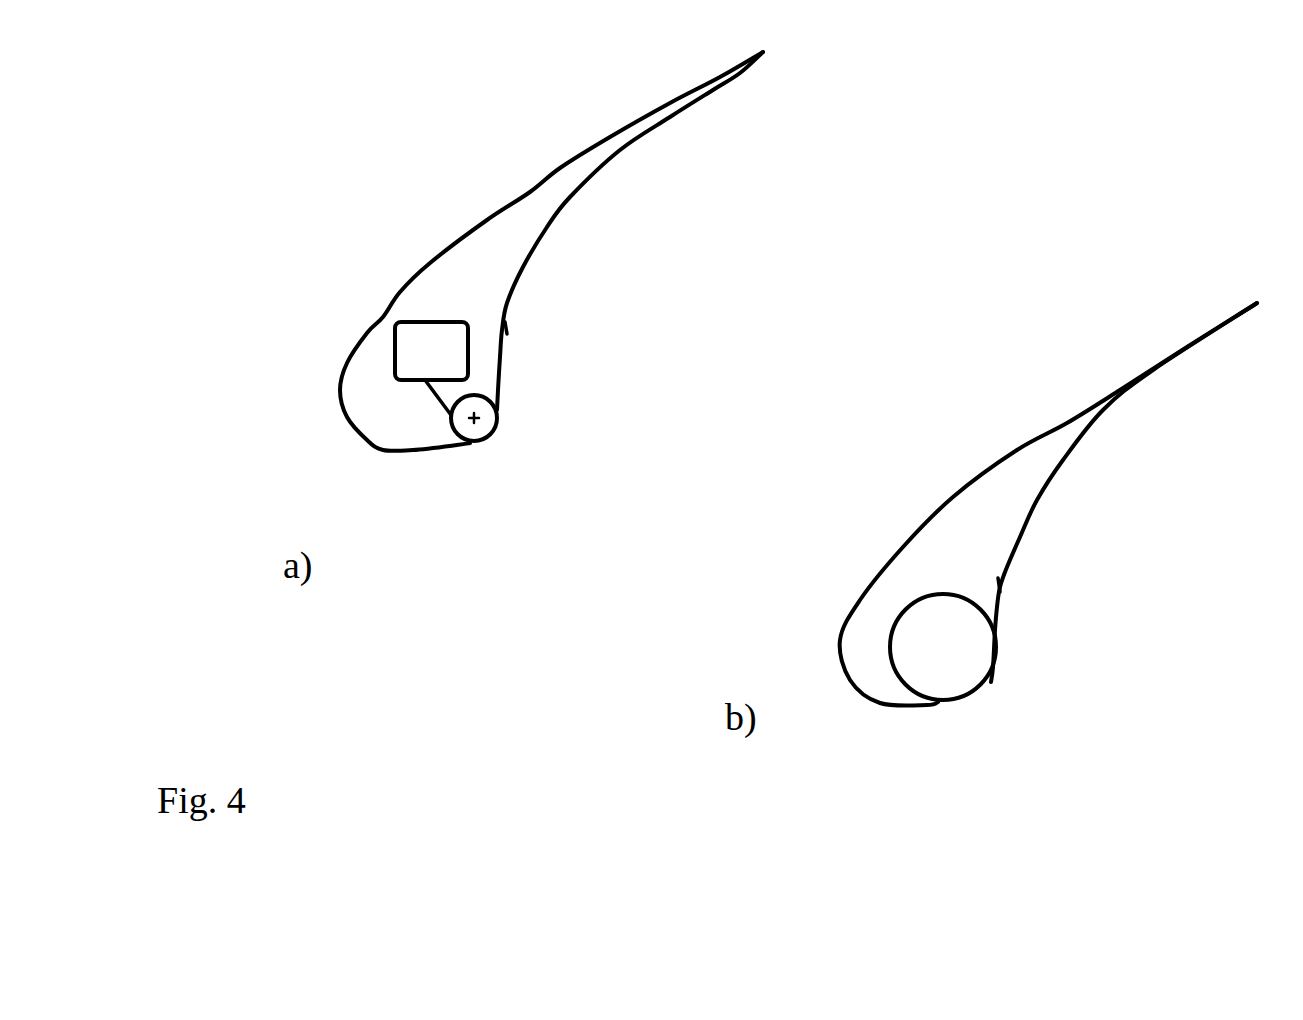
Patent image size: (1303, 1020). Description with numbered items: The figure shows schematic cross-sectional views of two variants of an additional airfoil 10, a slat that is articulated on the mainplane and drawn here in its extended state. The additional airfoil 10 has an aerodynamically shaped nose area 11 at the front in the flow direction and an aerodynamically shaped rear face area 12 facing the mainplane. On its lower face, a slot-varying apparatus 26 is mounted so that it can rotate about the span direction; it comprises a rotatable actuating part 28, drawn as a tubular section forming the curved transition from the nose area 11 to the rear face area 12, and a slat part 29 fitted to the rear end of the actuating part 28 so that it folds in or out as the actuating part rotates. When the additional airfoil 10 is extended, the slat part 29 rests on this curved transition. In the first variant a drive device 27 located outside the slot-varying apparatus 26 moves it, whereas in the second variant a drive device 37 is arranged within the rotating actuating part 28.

The additional airfoil 10 is at (499, 277).
The nose area 11 is at (487, 220).
The rear face area 12 is at (550, 228).
The slot-varying apparatus 26 is at (592, 449).
The drive device 27 is at (422, 343).
The actuating part 28 is at (480, 442).
The slat part 29 is at (507, 368).
The drive device 37 is at (966, 666).